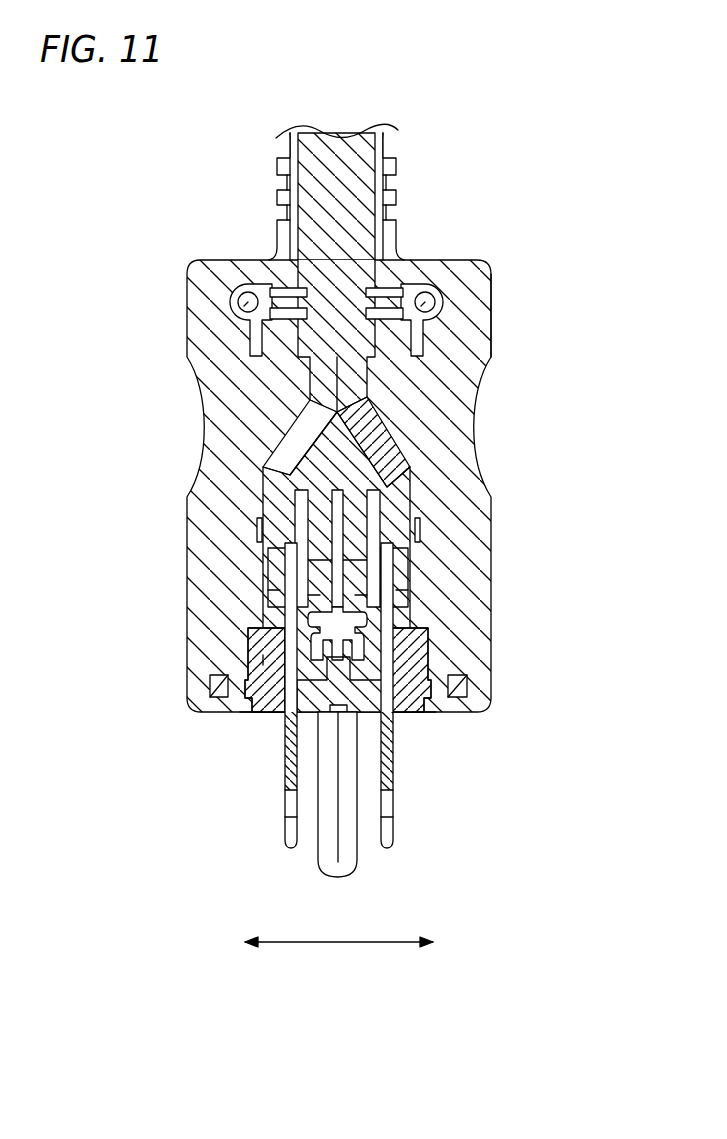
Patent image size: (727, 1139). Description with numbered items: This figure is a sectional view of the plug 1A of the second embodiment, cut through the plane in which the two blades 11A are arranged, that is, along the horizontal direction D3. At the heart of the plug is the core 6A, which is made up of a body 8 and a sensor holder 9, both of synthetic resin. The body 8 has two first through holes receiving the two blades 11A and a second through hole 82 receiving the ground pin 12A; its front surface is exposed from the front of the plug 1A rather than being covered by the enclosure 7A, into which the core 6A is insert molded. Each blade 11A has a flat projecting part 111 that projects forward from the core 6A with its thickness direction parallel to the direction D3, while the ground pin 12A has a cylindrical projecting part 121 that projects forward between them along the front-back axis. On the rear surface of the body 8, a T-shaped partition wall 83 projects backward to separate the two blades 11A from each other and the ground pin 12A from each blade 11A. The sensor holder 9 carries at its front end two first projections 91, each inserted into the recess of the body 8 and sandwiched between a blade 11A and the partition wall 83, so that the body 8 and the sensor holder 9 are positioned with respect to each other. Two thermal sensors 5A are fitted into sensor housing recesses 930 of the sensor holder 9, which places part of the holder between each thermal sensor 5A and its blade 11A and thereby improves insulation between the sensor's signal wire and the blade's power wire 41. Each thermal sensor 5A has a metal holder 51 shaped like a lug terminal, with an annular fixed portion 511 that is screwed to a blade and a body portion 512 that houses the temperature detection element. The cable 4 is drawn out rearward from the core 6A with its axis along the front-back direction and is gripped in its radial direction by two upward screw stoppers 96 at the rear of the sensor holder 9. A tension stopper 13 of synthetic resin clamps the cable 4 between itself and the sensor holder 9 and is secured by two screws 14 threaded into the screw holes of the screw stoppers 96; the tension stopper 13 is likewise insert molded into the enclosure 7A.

The cable 4 is at (343, 145).
The screw stopper 96 is at (247, 297).
The tension stopper 13 is at (387, 292).
The screw 14 is at (233, 287).
The plug 1A is at (185, 297).
The enclosure 7A is at (491, 293).
The sensor holder 9 is at (390, 477).
The sensor housing recess 930 is at (320, 507).
The thermal sensor 5A is at (278, 548).
The holder 51 is at (313, 573).
The power wire 41 is at (278, 588).
The body portion 512 is at (313, 600).
The core 6A is at (257, 660).
The second through hole 82 is at (367, 655).
The fixed portion 511 is at (280, 643).
The first projection 91 is at (252, 712).
The body 8 is at (277, 720).
The partition wall 83 is at (397, 723).
The blade 11A is at (290, 772).
The projecting part 111 is at (285, 830).
The projecting part 121 is at (328, 865).
The ground pin 12A is at (347, 865).
The horizontal direction D3 is at (339, 959).